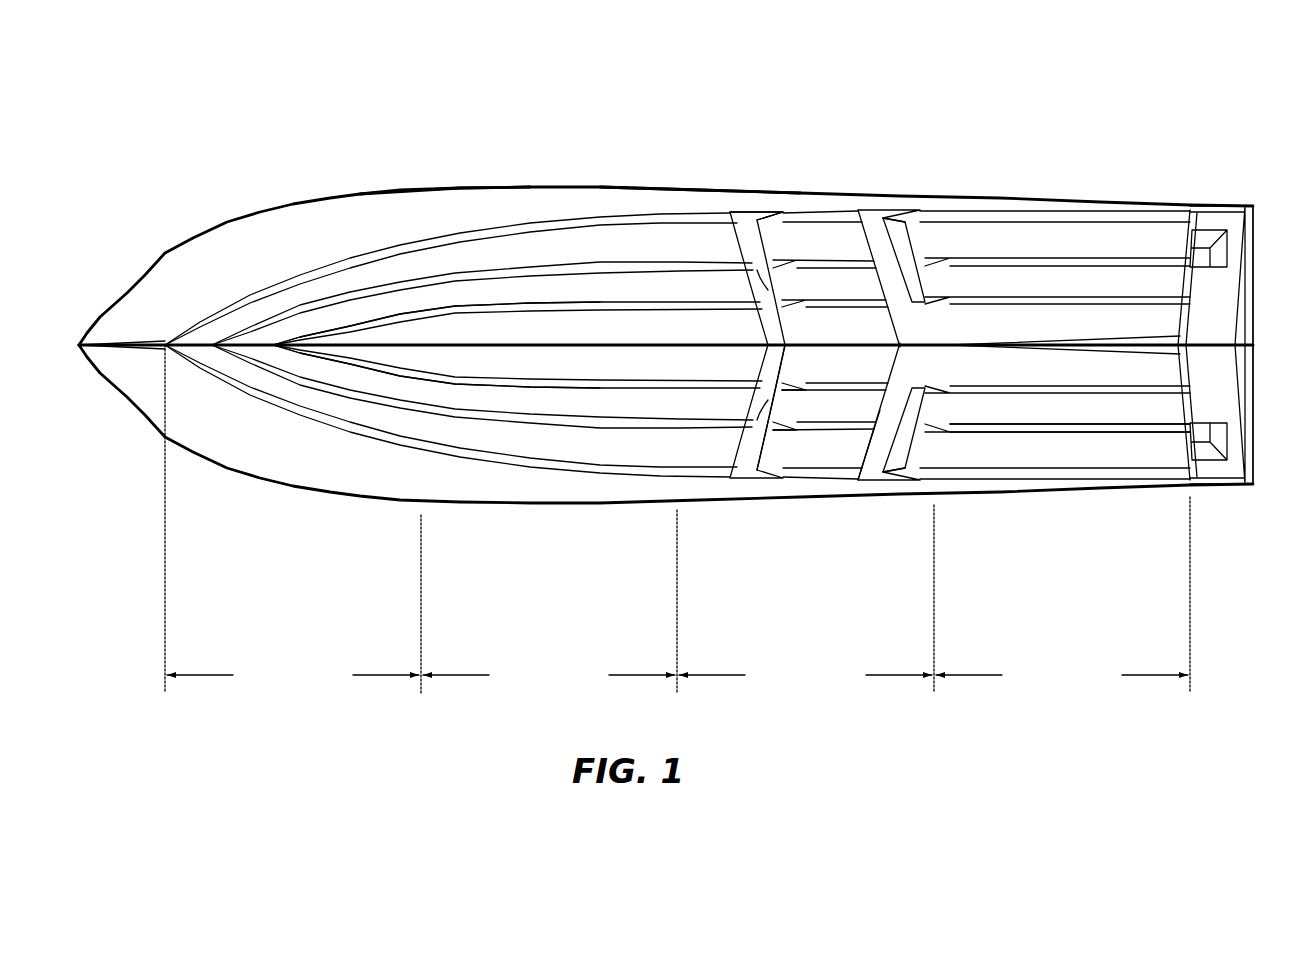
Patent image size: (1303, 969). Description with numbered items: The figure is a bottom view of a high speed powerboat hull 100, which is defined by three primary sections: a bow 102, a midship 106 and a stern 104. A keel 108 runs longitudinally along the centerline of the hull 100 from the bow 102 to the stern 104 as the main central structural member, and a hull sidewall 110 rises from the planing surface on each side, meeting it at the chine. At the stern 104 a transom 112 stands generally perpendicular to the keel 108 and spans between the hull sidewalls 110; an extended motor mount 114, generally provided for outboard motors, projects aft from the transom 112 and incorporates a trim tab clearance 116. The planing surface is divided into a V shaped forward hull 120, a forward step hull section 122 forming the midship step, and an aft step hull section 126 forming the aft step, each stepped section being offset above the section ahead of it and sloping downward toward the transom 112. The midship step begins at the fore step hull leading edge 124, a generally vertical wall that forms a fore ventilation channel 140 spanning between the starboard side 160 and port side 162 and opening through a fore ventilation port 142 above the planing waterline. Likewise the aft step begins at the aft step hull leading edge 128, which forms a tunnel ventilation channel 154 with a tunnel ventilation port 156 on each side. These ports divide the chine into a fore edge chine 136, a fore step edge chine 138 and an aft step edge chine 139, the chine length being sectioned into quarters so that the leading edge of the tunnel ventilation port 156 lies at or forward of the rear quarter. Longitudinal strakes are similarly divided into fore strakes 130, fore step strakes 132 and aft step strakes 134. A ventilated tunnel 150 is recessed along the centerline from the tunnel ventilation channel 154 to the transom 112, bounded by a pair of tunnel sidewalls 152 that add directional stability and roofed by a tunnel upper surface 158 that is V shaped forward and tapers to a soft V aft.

The powerboat hull 100 is at (320, 550).
The bow 102 is at (76, 358).
The stern 104 is at (1250, 197).
The midship 106 is at (689, 178).
The keel 108 is at (373, 347).
The hull sidewall 110 is at (272, 458).
The transom 112 is at (1188, 445).
The motor mount 114 is at (1250, 393).
The trim tab clearance 116 is at (1210, 236).
The forward hull 120 is at (683, 447).
The forward step hull section 122 is at (815, 450).
The fore step hull leading edge 124 is at (755, 445).
The aft step hull section 126 is at (1050, 452).
The aft step hull leading edge 128 is at (888, 455).
The fore strakes 130 is at (508, 382).
The fore step strakes 132 is at (862, 258).
The aft step strakes 134 is at (955, 260).
The fore edge chine 136 is at (565, 226).
The fore step edge chine 138 is at (807, 218).
The aft step edge chine 139 is at (1018, 218).
The fore ventilation channel 140 is at (767, 287).
The fore ventilation port 142 is at (748, 213).
The ventilated tunnel 150 is at (1005, 327).
The tunnel sidewall 152 is at (1043, 300).
The tunnel ventilation channel 154 is at (905, 275).
The tunnel ventilation port 156 is at (891, 224).
The tunnel upper surface 158 is at (1154, 319).
The starboard side 160 is at (398, 529).
The port side 162 is at (416, 149).